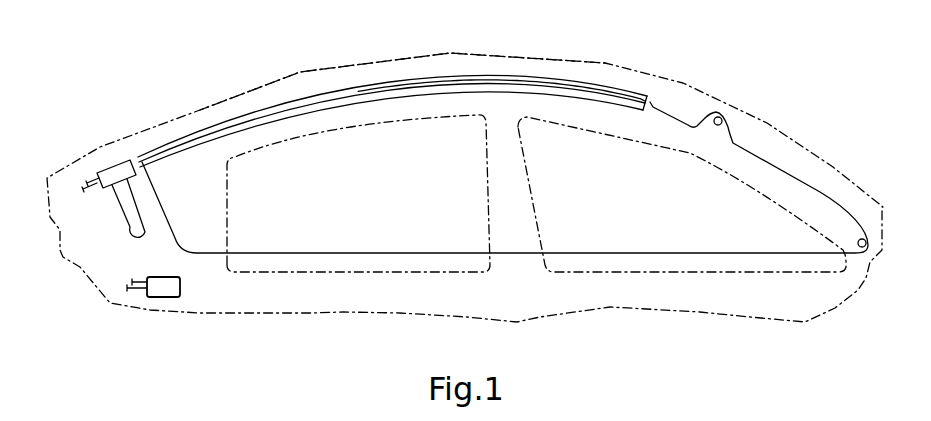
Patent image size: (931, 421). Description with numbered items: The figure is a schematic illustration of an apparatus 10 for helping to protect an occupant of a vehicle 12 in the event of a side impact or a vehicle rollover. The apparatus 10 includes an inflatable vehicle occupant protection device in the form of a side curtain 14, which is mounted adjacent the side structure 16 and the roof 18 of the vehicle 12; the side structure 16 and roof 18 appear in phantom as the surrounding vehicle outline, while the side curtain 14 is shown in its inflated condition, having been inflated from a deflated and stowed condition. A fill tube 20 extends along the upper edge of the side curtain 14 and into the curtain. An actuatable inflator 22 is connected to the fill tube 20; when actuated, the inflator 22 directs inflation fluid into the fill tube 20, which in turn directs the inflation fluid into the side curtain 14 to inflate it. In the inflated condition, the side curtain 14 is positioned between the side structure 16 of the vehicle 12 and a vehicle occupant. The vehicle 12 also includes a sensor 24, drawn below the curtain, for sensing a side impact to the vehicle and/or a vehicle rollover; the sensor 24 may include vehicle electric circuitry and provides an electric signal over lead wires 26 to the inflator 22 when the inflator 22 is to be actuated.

The apparatus 10 is at (170, 82).
The vehicle 12 is at (786, 108).
The side curtain 14 is at (367, 262).
The side structure 16 is at (519, 262).
The roof 18 is at (347, 65).
The fill tube 20 is at (523, 80).
The inflator 22 is at (113, 230).
The sensor 24 is at (163, 285).
The lead wires 26 is at (96, 181).